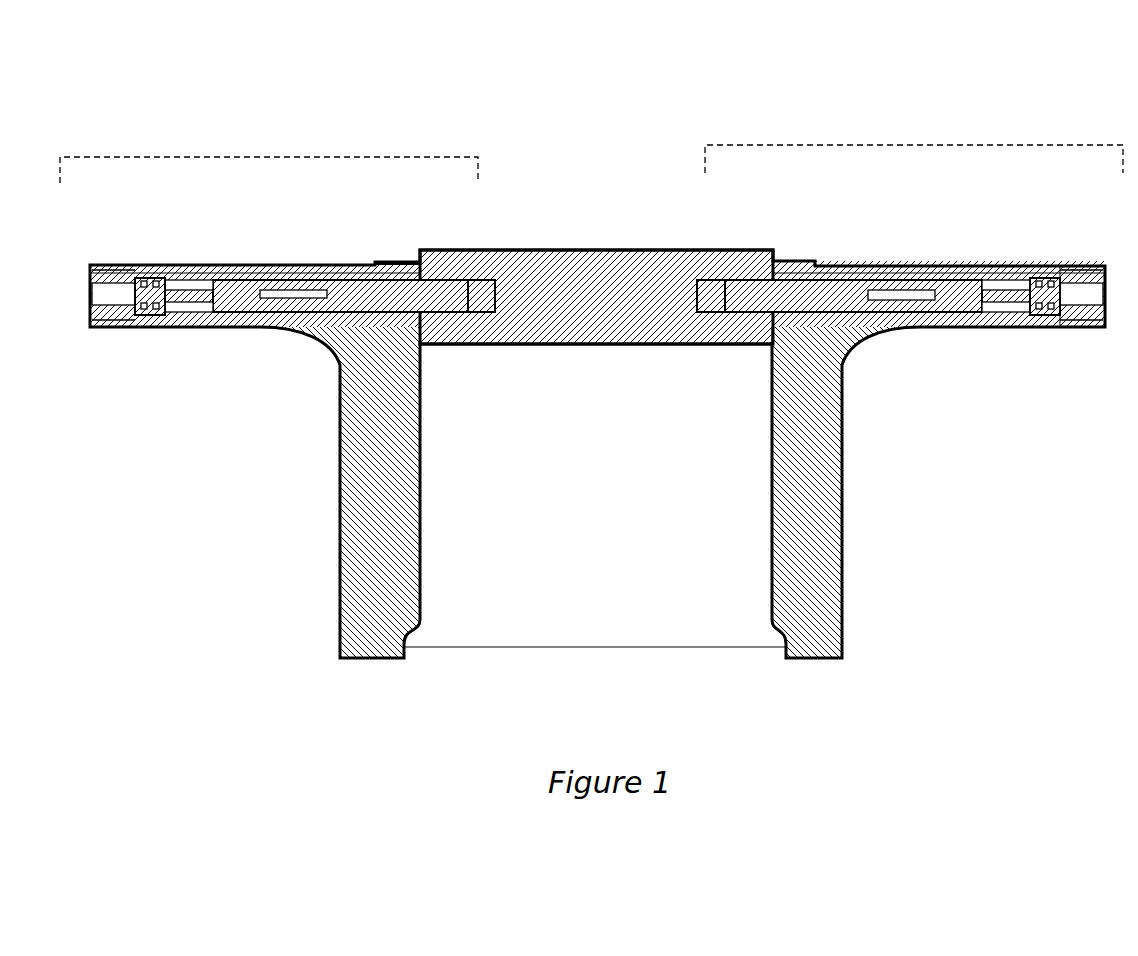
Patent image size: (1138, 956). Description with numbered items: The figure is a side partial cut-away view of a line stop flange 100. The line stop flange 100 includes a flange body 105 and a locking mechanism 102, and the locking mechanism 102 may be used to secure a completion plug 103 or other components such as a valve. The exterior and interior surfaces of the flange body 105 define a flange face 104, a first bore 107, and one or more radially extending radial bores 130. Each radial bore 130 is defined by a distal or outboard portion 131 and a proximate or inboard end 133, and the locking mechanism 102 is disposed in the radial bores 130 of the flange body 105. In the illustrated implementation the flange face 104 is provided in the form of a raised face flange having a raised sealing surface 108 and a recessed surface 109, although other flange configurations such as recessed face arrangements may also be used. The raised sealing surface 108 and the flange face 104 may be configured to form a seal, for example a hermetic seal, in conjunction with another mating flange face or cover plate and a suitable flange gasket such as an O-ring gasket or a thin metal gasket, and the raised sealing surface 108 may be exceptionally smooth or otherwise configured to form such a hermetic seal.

The line stop flange 100 is at (428, 115).
The locking mechanism 102 is at (265, 157).
The completion plug 103 is at (587, 250).
The flange face 104 is at (990, 240).
The flange body 105 is at (905, 533).
The first bore 107 is at (772, 500).
The raised sealing surface 108 is at (787, 260).
The recessed surface 109 is at (925, 266).
The radial bore 130 is at (1003, 320).
The outboard portion 131 is at (1102, 338).
The inboard end 133 is at (765, 335).